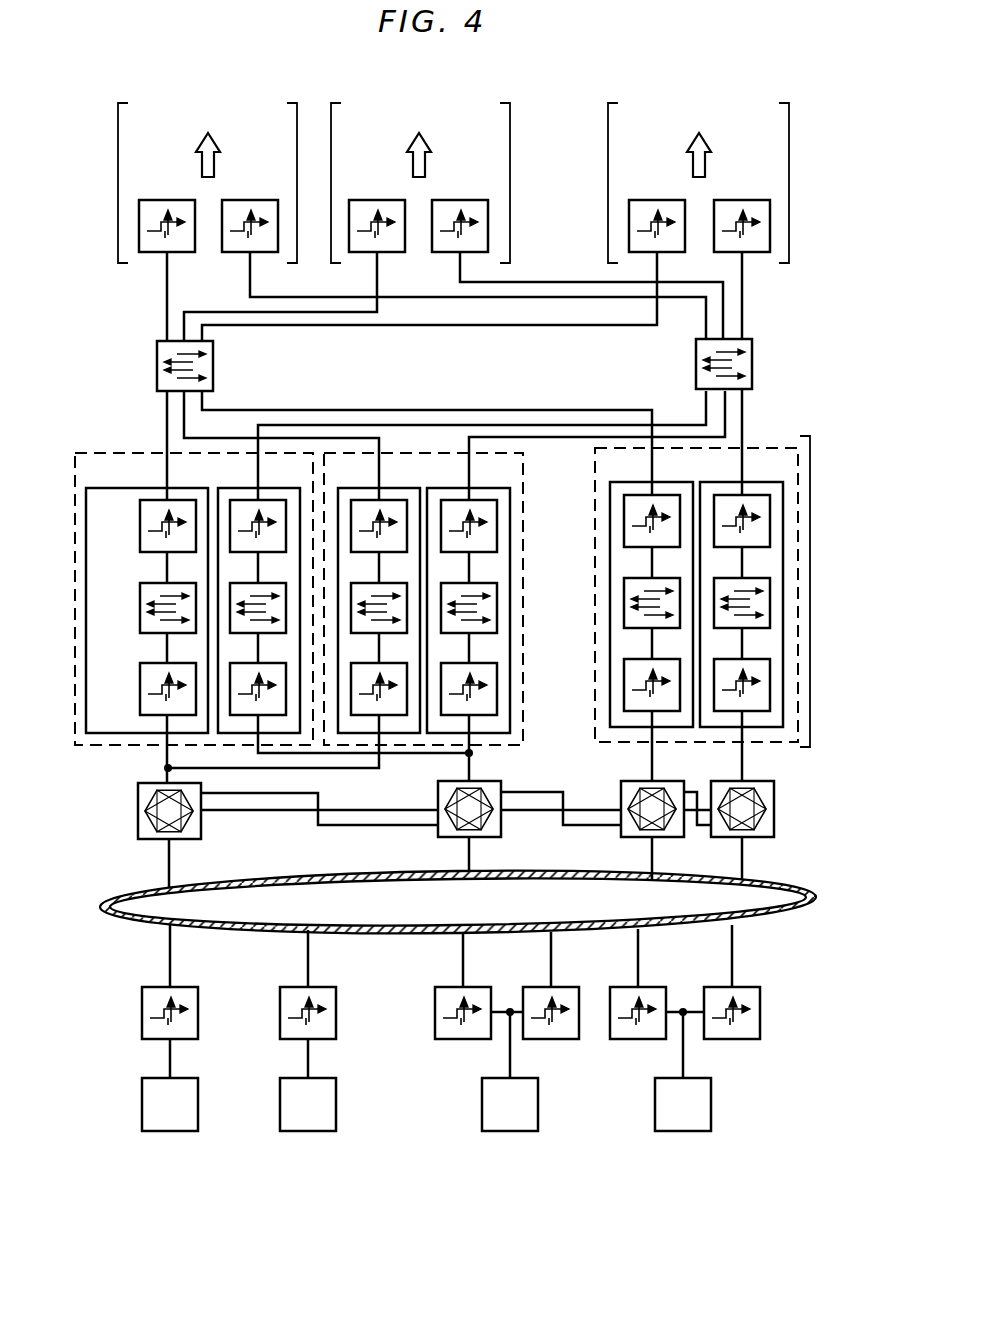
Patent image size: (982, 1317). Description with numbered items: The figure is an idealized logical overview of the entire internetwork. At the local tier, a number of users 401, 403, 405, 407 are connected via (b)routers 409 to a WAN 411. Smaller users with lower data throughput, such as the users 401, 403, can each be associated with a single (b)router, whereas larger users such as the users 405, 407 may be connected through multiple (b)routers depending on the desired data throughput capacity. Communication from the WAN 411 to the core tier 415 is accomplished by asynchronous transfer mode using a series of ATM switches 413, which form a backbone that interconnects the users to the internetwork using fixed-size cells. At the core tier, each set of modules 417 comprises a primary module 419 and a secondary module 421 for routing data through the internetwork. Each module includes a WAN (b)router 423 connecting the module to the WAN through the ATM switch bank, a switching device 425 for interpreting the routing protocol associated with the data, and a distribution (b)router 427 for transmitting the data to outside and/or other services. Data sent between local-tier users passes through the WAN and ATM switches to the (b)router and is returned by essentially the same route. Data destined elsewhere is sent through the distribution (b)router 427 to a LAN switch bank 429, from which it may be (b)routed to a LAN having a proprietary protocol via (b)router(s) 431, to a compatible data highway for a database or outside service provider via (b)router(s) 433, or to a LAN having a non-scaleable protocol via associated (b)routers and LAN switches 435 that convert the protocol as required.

The user 401 is at (190, 1118).
The user 403 is at (328, 1118).
The user 405 is at (530, 1118).
The user 407 is at (703, 1118).
The (b)routers 409 is at (280, 1007).
The WAN 411 is at (132, 886).
The ATM switches 413 is at (440, 832).
The core tier 415 is at (810, 597).
The set of modules 417 is at (194, 585).
The primary module 419 is at (147, 596).
The secondary module 421 is at (242, 488).
The WAN (b)router 423 is at (140, 684).
The switching device 425 is at (140, 610).
The distribution (b)router 427 is at (140, 528).
The LAN switch bank 429 is at (157, 364).
The (b)router(s) 431 is at (118, 183).
The (b)router(s) 433 is at (510, 178).
The LAN switches 435 is at (789, 170).